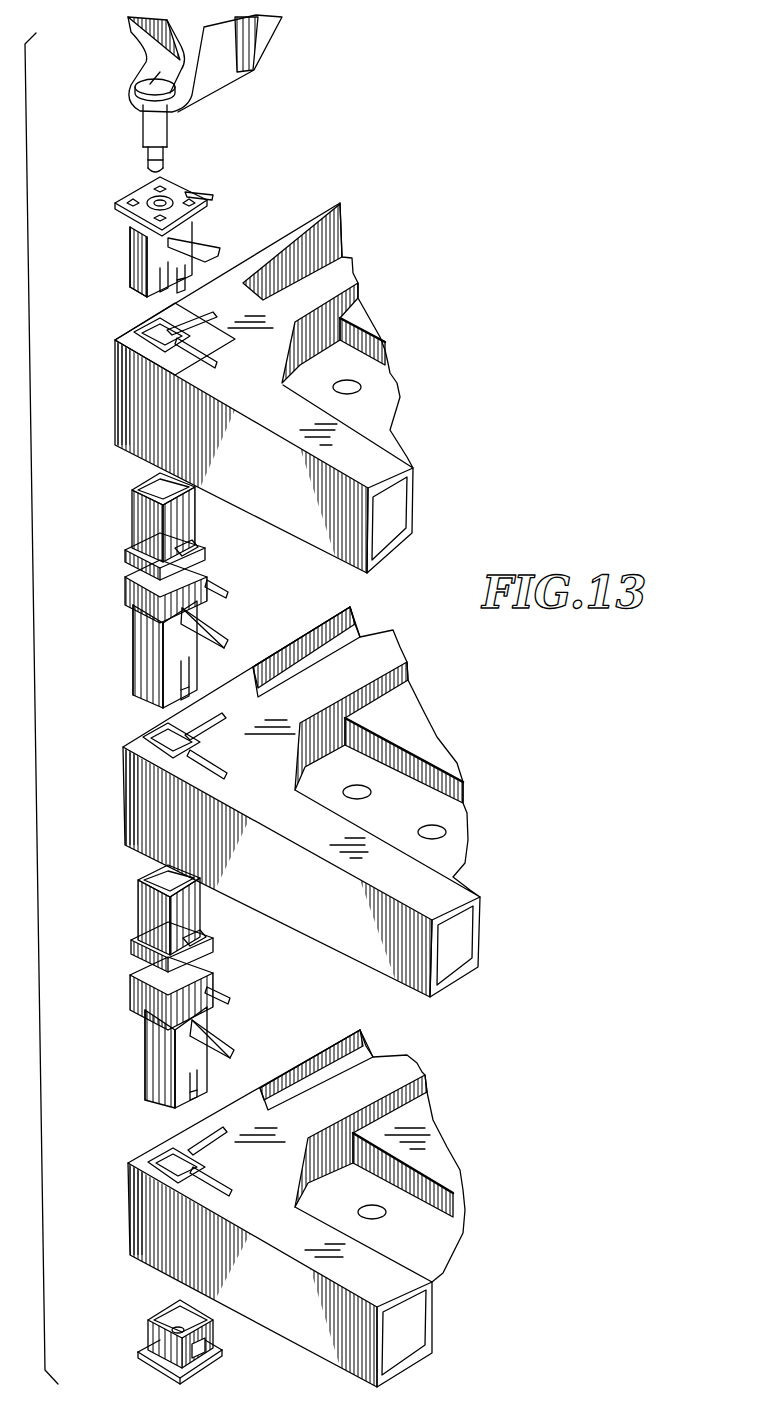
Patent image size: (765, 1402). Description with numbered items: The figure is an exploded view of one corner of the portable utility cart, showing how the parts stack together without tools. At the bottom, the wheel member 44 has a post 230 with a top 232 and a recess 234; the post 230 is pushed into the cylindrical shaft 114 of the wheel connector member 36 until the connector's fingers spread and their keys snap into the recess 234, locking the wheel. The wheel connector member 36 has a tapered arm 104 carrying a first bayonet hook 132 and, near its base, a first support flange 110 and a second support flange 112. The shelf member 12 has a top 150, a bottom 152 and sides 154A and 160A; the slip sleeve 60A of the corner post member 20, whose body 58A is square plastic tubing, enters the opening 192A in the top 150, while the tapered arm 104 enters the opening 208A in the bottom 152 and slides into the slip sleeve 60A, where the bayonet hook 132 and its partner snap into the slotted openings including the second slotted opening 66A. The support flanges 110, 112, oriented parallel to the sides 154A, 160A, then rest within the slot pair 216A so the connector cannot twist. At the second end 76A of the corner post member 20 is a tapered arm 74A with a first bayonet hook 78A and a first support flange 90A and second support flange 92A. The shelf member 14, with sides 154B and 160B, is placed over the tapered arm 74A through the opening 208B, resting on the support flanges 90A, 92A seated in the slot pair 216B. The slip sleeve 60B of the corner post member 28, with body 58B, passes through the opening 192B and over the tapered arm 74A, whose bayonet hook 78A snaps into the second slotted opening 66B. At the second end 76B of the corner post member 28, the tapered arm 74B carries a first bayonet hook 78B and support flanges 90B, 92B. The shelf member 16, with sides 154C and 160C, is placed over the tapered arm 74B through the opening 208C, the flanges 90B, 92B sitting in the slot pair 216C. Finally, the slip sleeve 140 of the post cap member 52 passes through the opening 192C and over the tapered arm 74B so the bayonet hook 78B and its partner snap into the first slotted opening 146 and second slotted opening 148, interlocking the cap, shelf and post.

The shelf member 12 is at (232, 386).
The shelf member 14 is at (266, 798).
The shelf member 16 is at (258, 1197).
The corner post member 20 is at (176, 591).
The corner post member 28 is at (176, 986).
The wheel connector member 36 is at (174, 240).
The wheel member 44 is at (130, 26).
The post cap member 52 is at (166, 1341).
The body 58A is at (126, 590).
The body 58B is at (131, 990).
The slip sleeve 60A is at (135, 512).
The slip sleeve 60B is at (142, 904).
The second slotted opening 66A is at (200, 553).
The second slotted opening 66B is at (200, 940).
The tapered arm 74A is at (159, 655).
The tapered arm 74B is at (165, 1057).
The second end 76A is at (138, 624).
The second end 76B is at (147, 1025).
The first bayonet hook 78A is at (192, 693).
The first bayonet hook 78B is at (200, 1092).
The first support flange 90A is at (220, 640).
The first support flange 90B is at (236, 1046).
The second support flange 92A is at (228, 593).
The second support flange 92B is at (230, 997).
The tapered arm 104 is at (138, 270).
The first support flange 110 is at (220, 250).
The second support flange 112 is at (213, 196).
The cylindrical shaft 114 is at (150, 196).
The first bayonet hook 132 is at (182, 286).
The slip sleeve 140 is at (166, 1341).
The first slotted opening 146 is at (200, 1352).
The second slotted opening 148 is at (175, 1327).
The top 150 is at (266, 793).
The bottom 152 is at (306, 232).
The side 154A is at (262, 497).
The side 154B is at (323, 928).
The side 154C is at (297, 1335).
The side 160A is at (148, 320).
The side 160B is at (308, 632).
The side 160C is at (322, 1040).
The opening 192A is at (120, 440).
The opening 192B is at (128, 835).
The opening 192C is at (130, 1248).
The opening 208A is at (140, 336).
The opening 208B is at (148, 745).
The opening 208C is at (152, 1165).
The slot pair 216A is at (210, 362).
The slot pair 216B is at (190, 723).
The slot pair 216C is at (195, 1142).
The post 230 is at (153, 138).
The top 232 is at (164, 167).
The recess 234 is at (165, 155).